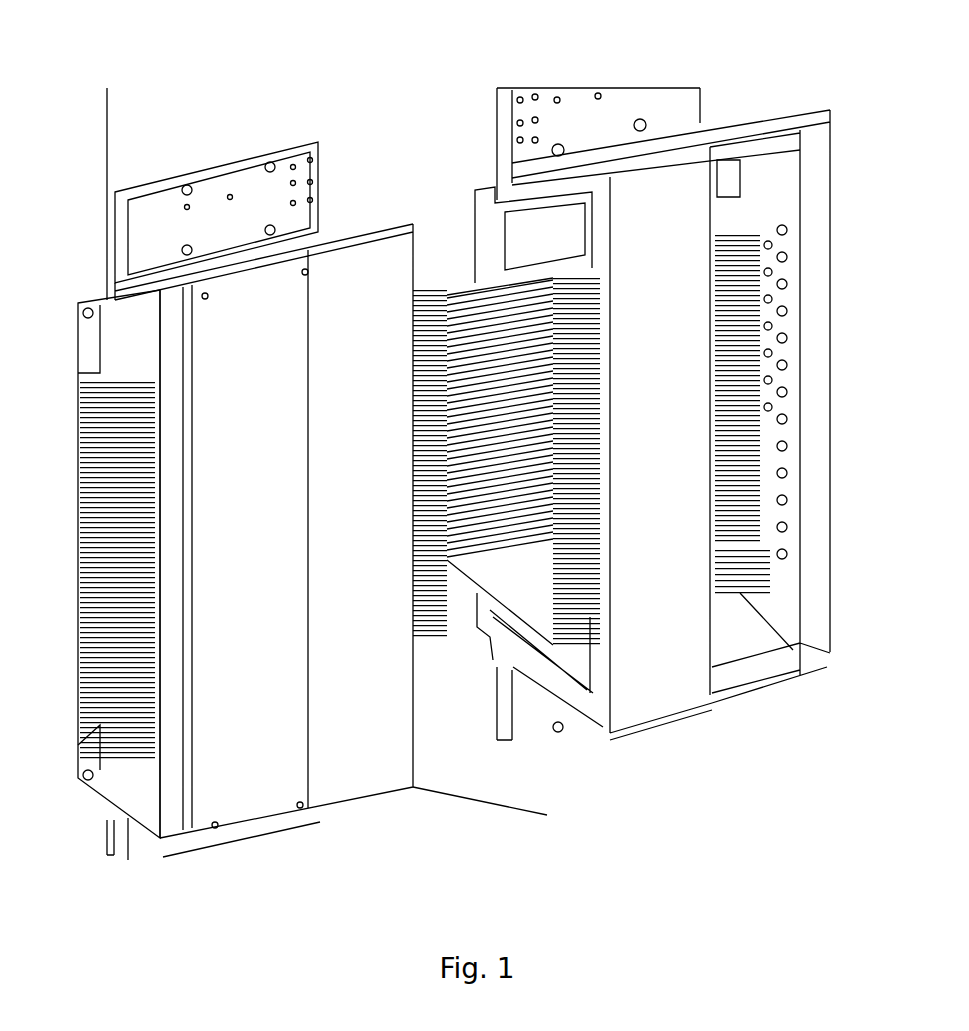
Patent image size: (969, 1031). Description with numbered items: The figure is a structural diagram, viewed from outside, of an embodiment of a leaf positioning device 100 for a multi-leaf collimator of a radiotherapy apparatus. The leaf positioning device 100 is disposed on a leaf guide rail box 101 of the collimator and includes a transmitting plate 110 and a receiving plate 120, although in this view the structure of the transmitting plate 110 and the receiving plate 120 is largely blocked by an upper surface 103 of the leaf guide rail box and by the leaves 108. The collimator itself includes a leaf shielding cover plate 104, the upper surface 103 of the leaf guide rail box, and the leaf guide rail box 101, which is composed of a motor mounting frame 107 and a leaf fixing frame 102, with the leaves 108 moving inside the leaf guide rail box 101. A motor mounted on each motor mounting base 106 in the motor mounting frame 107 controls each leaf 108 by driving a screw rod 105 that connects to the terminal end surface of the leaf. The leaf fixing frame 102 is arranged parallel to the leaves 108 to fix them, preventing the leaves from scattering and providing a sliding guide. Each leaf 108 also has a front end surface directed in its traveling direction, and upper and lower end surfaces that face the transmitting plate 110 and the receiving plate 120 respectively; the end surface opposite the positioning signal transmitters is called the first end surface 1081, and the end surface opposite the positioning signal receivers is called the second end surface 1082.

The leaf positioning device 100 is at (772, 55).
The leaf guide rail box 101 is at (387, 113).
The leaf fixing frame 102 is at (502, 200).
The upper surface of the leaf guide rail box 103 is at (657, 693).
The leaf shielding cover plate 104 is at (253, 316).
The screw rod 105 is at (805, 650).
The motor mounting base 106 is at (97, 723).
The motor mounting frame 107 is at (123, 358).
The leaves 108 is at (465, 283).
The first end surface 1081 is at (588, 296).
The second end surface 1082 is at (455, 300).
The transmitting plate 110 is at (622, 637).
The receiving plate 120 is at (483, 258).